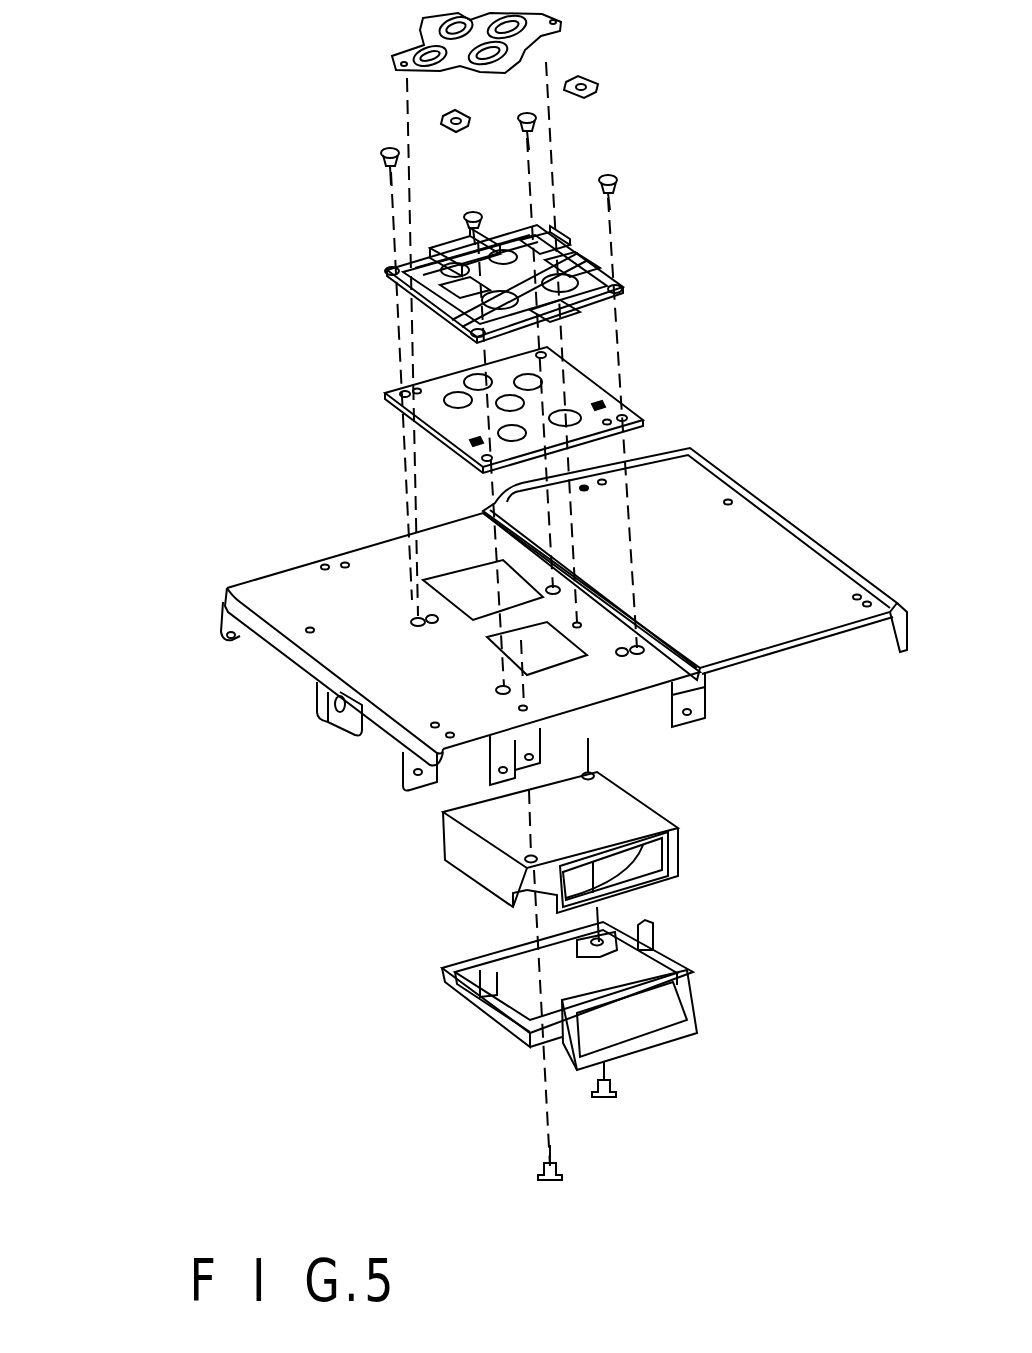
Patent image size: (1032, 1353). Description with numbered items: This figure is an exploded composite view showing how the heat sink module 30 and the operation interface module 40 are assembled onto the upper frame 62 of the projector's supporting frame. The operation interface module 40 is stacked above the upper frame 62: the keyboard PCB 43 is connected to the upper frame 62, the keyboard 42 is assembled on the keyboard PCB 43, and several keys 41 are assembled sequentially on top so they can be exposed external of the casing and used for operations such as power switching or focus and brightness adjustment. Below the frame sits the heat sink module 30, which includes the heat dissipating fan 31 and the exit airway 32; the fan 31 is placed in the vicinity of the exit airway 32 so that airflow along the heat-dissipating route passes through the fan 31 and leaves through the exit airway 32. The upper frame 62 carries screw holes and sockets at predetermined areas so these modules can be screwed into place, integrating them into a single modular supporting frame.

The heat sink module 30 is at (272, 866).
The heat dissipating fan 31 is at (470, 868).
The exit airway 32 is at (482, 1045).
The operation interface module 40 is at (113, 63).
The keys 41 is at (412, 53).
The keyboard 42 is at (430, 270).
The keyboard PCB 43 is at (452, 420).
The upper frame 62 is at (770, 533).